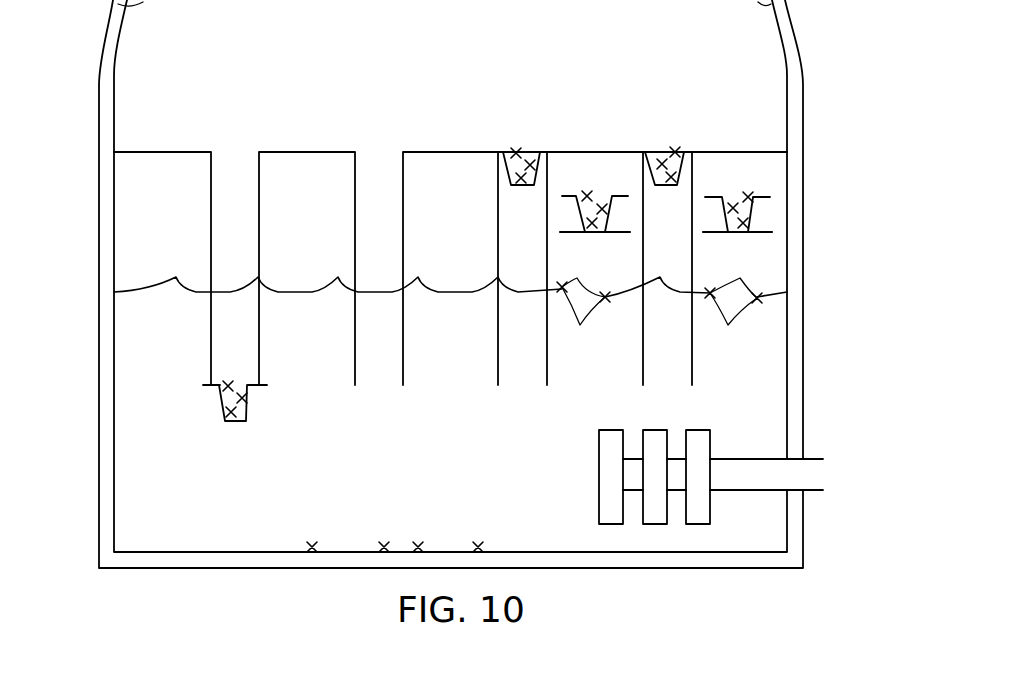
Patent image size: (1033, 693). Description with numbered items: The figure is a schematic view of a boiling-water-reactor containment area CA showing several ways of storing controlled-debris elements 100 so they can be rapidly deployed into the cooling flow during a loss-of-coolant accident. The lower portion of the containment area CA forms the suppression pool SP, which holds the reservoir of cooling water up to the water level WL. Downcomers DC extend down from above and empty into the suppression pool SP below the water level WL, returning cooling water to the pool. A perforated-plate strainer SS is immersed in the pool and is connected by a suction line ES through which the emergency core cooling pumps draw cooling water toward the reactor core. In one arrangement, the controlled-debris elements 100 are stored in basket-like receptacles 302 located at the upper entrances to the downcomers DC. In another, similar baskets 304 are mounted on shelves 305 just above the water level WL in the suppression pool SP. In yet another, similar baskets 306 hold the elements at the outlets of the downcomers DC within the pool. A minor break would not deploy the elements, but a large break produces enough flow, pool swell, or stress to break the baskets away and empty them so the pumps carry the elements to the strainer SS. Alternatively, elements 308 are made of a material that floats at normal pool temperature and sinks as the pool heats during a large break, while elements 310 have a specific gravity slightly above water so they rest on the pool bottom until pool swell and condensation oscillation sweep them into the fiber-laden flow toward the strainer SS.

The controlled-debris elements 100 is at (535, 152).
The basket-like receptacles 302 is at (498, 152).
The baskets 304 is at (577, 215).
The shelves 305 is at (570, 234).
The baskets 306 is at (220, 402).
The floating controlled-debris elements 308 is at (553, 318).
The bottom-resident controlled-debris elements 310 is at (450, 491).
The containment area CA is at (226, 48).
The downcomers DC is at (241, 170).
The water level WL is at (143, 292).
The suppression pool SP is at (157, 477).
The perforated-plate strainer SS is at (617, 476).
The suction line ES is at (727, 468).